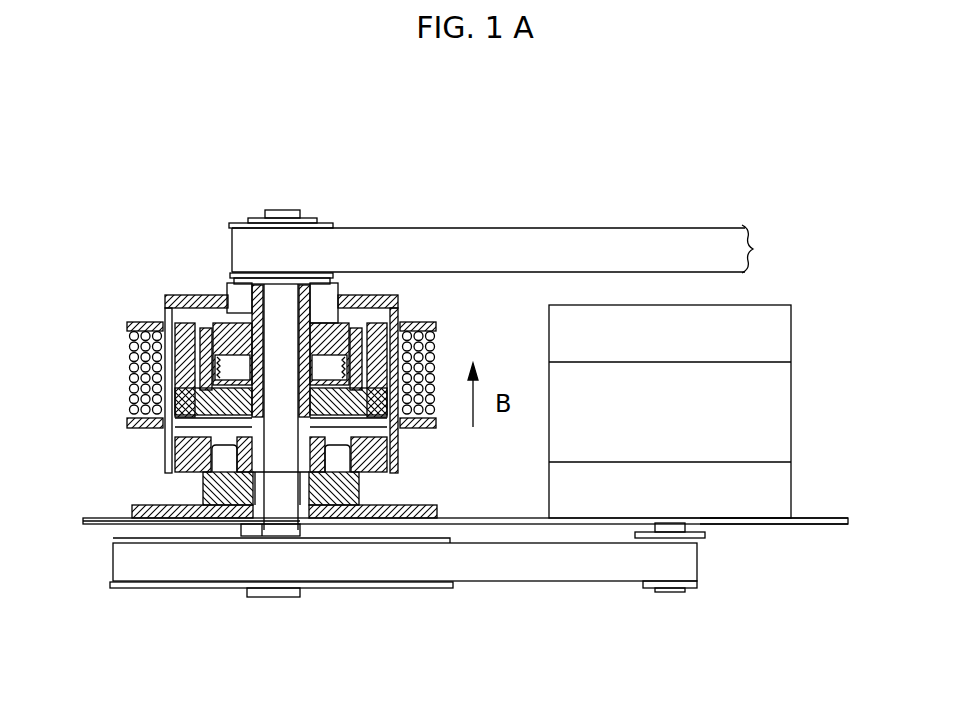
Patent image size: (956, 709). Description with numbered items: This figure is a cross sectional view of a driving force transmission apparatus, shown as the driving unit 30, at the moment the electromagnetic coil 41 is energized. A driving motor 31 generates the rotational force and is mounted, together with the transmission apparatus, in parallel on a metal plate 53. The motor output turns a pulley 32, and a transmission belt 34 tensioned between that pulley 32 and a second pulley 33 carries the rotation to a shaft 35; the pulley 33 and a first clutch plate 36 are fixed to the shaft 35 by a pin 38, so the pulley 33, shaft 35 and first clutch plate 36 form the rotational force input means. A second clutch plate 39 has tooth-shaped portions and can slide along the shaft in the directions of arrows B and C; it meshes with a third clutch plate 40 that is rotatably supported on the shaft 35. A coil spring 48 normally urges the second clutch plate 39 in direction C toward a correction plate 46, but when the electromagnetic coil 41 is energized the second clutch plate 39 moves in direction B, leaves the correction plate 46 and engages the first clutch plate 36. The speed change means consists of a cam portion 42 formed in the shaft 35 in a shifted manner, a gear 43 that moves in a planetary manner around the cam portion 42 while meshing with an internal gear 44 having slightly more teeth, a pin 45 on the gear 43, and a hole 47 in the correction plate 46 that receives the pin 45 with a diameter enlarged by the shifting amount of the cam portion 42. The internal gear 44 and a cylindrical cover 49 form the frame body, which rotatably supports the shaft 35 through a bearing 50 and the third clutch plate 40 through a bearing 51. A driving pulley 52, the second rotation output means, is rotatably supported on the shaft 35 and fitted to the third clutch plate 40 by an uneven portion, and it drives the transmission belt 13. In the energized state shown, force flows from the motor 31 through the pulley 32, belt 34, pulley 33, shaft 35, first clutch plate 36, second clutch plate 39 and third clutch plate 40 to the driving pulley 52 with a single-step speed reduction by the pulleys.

The transmission belt 13 is at (585, 232).
The driving unit 30 is at (532, 524).
The driving motor 31 is at (765, 308).
The pulley 32 is at (688, 583).
The pulley 33 is at (407, 588).
The transmission belt 34 is at (595, 573).
The shaft 35 is at (273, 289).
The first clutch plate 36 is at (215, 360).
The pin 38 is at (247, 330).
The second clutch plate 39 is at (170, 425).
The third clutch plate 40 is at (252, 355).
The electromagnetic coil 41 is at (438, 353).
The cam portion 42 is at (257, 497).
The gear 43 is at (250, 507).
The internal gear 44 is at (340, 520).
The pin 45 is at (195, 483).
The correction plate 46 is at (383, 455).
The hole 47 is at (178, 457).
The coil spring 48 is at (178, 405).
The cylindrical cover 49 is at (397, 302).
The bearing 50 is at (263, 498).
The bearing 51 is at (342, 286).
The driving pulley 52 is at (325, 223).
The metal plate 53 is at (752, 524).